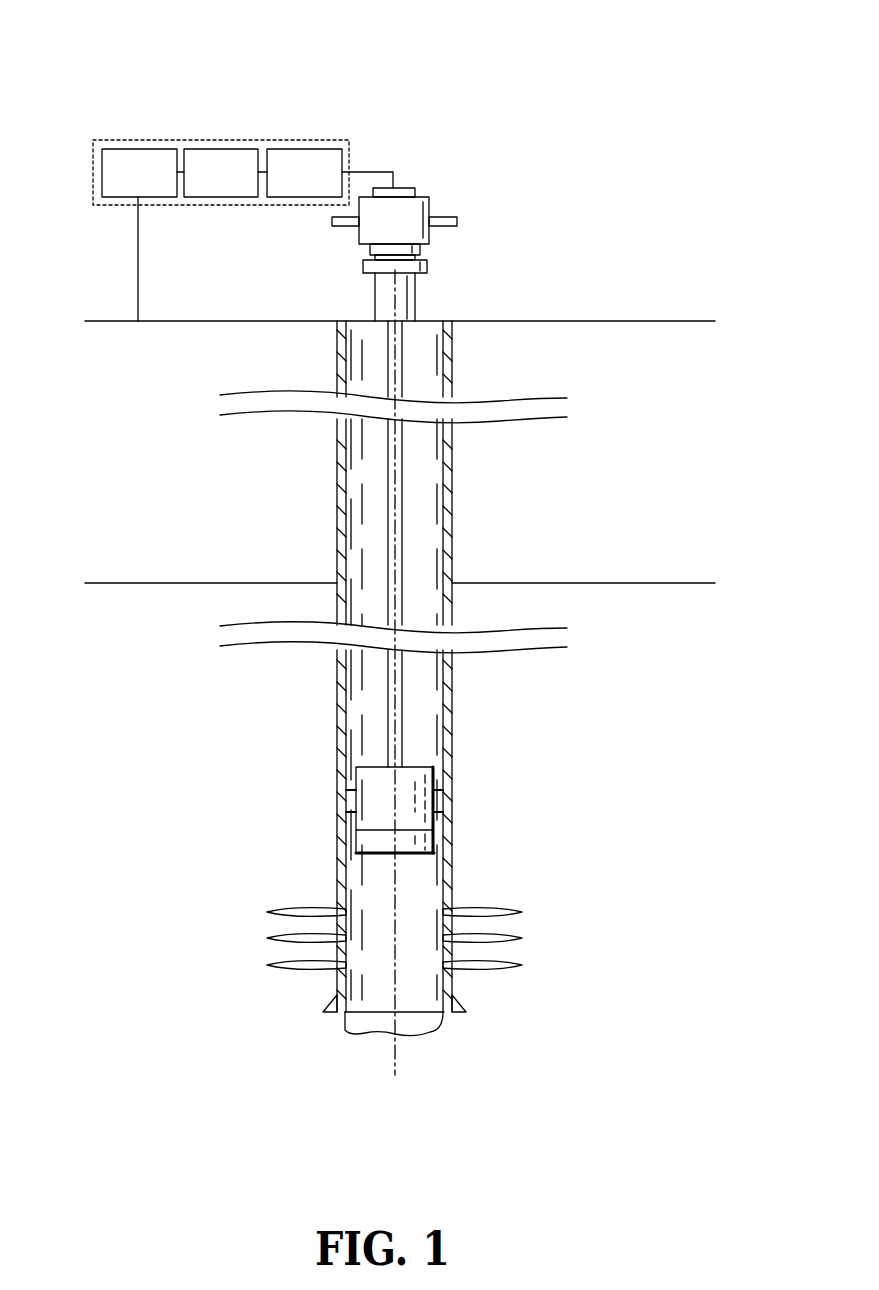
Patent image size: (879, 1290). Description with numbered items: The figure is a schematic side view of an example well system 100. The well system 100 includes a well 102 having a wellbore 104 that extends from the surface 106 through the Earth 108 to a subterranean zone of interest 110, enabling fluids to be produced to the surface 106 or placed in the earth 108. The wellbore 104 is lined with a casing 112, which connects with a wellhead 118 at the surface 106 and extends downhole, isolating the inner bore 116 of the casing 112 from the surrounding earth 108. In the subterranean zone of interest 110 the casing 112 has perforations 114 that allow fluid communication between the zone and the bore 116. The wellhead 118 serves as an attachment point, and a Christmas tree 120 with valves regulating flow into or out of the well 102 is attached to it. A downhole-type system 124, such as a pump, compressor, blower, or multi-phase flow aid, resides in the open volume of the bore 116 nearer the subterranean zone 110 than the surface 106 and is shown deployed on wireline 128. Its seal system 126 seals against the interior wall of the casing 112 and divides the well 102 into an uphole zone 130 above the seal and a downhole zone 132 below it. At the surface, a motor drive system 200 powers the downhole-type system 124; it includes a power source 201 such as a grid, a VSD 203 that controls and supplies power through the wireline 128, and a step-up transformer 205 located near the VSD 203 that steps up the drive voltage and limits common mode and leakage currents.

The well system 100 is at (682, 94).
The motor drive system 200 is at (242, 140).
The power source 201 is at (163, 190).
The VSD 203 is at (245, 190).
The step-up transformer 205 is at (328, 190).
The Christmas tree 120 is at (450, 196).
The wellhead 118 is at (327, 259).
The surface 106 is at (93, 320).
The well 102 is at (520, 370).
The Earth 108 is at (683, 517).
The subterranean zone of interest 110 is at (578, 695).
The casing 112 is at (337, 483).
The wellbore 104 is at (358, 522).
The inner bore 116 is at (418, 513).
The wireline 128 is at (400, 545).
The downhole-type system 124 is at (378, 760).
The seal system 126 is at (353, 810).
The uphole zone 130 is at (428, 743).
The downhole zone 132 is at (427, 885).
The perforations 114 is at (252, 944).